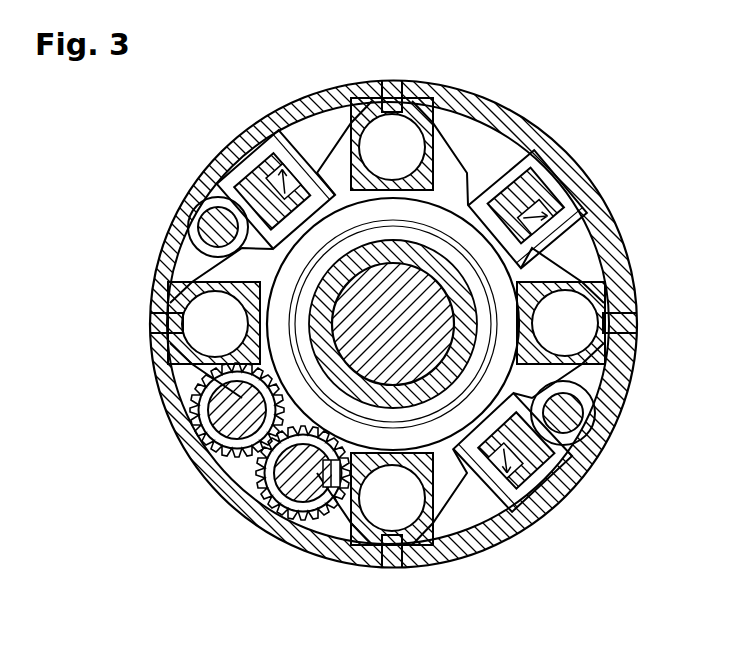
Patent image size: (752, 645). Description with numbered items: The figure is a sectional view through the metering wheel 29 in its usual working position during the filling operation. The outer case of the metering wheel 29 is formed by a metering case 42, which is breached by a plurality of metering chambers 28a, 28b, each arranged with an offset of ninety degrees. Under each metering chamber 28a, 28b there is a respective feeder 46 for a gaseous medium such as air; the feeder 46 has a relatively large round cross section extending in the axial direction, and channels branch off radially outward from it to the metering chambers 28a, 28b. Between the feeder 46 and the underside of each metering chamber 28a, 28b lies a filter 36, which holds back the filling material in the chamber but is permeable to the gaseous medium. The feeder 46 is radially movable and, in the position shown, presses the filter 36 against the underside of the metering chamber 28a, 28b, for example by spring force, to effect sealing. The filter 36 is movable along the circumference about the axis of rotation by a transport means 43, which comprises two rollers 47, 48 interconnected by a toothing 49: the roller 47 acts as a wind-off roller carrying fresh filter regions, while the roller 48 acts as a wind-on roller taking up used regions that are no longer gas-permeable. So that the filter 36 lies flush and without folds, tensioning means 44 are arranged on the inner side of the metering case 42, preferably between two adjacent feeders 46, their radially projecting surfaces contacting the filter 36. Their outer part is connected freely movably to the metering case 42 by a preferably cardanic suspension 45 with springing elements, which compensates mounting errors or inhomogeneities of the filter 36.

The metering chamber 28a is at (394, 84).
The metering chamber 28b is at (393, 570).
The metering wheel 29 is at (313, 137).
The filter 36 is at (592, 276).
The metering case 42 is at (517, 122).
The transport means 43 is at (230, 475).
The tensioning means 44 is at (520, 172).
The suspension 45 is at (548, 170).
The feeder 46 is at (614, 293).
The roller 47 is at (222, 432).
The roller 48 is at (305, 500).
The toothing 49 is at (260, 457).